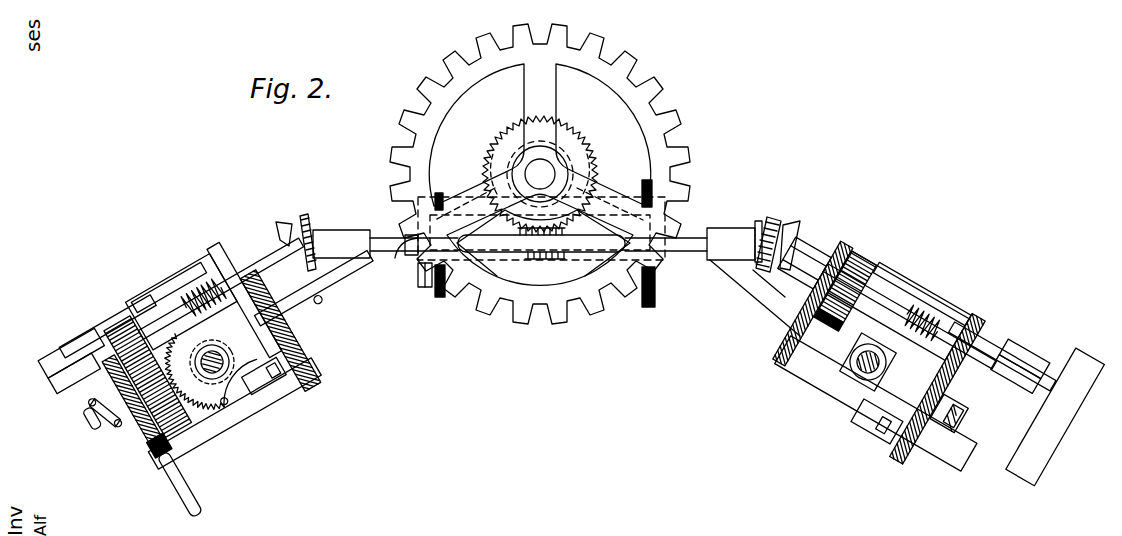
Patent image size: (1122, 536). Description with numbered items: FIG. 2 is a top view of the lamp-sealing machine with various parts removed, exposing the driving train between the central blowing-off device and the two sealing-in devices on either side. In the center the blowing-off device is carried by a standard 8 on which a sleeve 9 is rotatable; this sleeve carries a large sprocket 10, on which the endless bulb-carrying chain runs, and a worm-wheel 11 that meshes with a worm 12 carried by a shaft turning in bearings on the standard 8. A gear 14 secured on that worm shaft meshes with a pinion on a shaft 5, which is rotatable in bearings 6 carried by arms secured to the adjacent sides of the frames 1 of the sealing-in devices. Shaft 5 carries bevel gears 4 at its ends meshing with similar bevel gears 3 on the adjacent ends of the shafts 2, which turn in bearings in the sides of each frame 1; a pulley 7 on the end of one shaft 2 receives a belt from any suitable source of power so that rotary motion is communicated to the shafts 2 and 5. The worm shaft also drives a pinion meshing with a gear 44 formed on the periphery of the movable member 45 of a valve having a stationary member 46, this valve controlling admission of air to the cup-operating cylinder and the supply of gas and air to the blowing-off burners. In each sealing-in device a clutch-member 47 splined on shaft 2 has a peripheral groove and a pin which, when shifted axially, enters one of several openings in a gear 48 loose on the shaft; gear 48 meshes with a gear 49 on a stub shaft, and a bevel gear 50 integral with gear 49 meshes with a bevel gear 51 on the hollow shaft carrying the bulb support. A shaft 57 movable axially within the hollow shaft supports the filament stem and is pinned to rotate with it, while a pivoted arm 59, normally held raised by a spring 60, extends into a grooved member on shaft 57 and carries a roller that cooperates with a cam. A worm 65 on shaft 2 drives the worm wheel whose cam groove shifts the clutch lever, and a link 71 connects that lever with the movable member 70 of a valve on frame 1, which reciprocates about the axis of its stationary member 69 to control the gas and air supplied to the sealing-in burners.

The frame 1 is at (311, 372).
The shaft 2 is at (230, 284).
The bevel gear 3 is at (285, 218).
The bevel gear 4 is at (303, 218).
The shaft 5 is at (497, 255).
The bearing 6 is at (343, 240).
The pulley 7 is at (1047, 453).
The standard 8 is at (545, 170).
The sleeve 9 is at (556, 167).
The sprocket 10 is at (518, 313).
The worm-wheel 11 is at (486, 156).
The worm 12 is at (535, 257).
The gear 14 is at (656, 296).
The gear 44 is at (440, 297).
The movable member 45 is at (434, 292).
The stationary member 46 is at (428, 288).
The clutch-member 47 is at (152, 297).
The gear 48 is at (122, 323).
The gear 49 is at (190, 441).
The bevel gear 50 is at (207, 412).
The bevel gear 51 is at (225, 404).
The shaft 57 is at (213, 347).
The pivoted arm 59 is at (250, 398).
The spring 60 is at (913, 400).
The worm 65 is at (187, 272).
The stationary member 69 is at (53, 383).
The movable member 70 is at (45, 367).
The link 71 is at (93, 327).